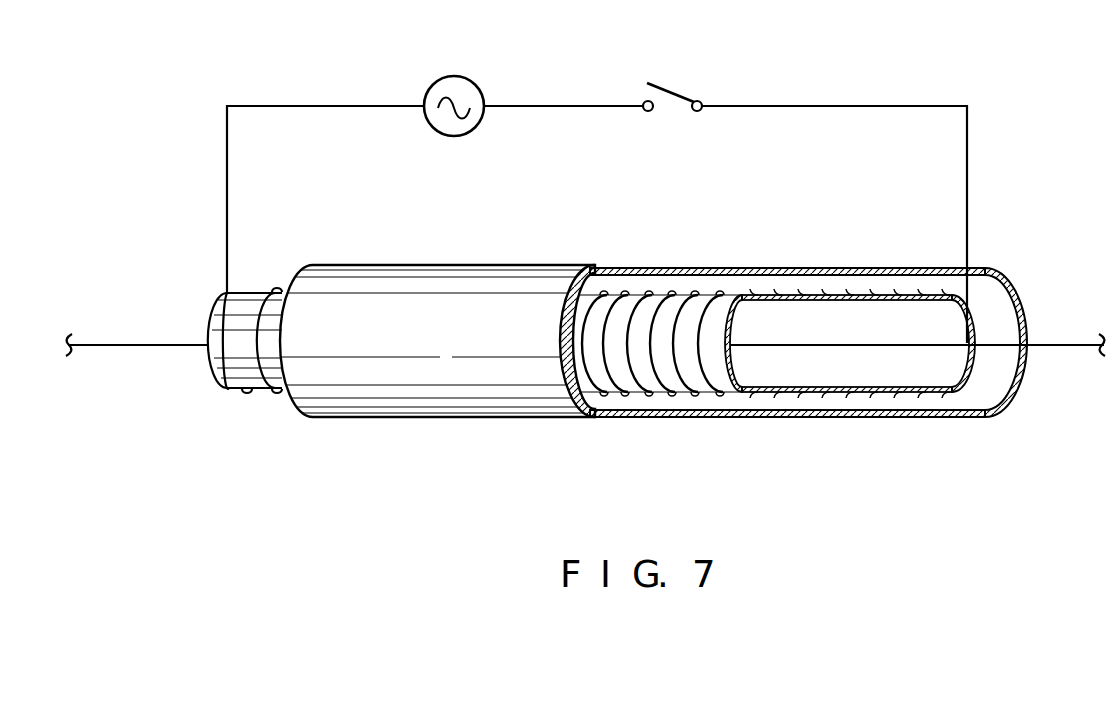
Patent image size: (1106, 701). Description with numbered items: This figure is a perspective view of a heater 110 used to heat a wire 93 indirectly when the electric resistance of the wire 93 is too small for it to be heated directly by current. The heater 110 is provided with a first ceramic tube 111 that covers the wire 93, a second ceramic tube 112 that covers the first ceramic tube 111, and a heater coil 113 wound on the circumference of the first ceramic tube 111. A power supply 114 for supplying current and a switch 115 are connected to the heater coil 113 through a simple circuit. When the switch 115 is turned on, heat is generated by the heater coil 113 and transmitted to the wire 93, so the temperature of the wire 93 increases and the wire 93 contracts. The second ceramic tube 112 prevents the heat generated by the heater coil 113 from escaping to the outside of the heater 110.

The wire 93 is at (1071, 347).
The heater 110 is at (718, 420).
The first ceramic tube 111 is at (972, 390).
The second ceramic tube 112 is at (814, 417).
The heater coil 113 is at (645, 392).
The power supply 114 is at (473, 83).
The switch 115 is at (673, 92).